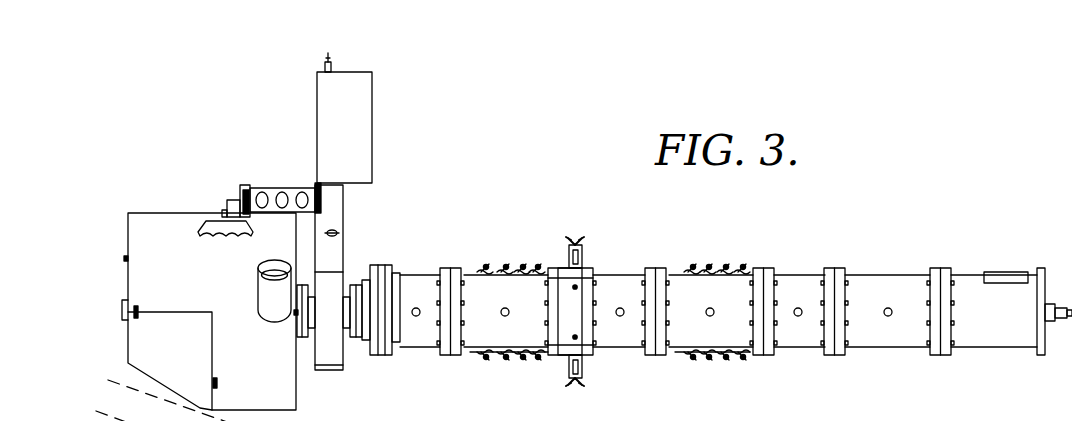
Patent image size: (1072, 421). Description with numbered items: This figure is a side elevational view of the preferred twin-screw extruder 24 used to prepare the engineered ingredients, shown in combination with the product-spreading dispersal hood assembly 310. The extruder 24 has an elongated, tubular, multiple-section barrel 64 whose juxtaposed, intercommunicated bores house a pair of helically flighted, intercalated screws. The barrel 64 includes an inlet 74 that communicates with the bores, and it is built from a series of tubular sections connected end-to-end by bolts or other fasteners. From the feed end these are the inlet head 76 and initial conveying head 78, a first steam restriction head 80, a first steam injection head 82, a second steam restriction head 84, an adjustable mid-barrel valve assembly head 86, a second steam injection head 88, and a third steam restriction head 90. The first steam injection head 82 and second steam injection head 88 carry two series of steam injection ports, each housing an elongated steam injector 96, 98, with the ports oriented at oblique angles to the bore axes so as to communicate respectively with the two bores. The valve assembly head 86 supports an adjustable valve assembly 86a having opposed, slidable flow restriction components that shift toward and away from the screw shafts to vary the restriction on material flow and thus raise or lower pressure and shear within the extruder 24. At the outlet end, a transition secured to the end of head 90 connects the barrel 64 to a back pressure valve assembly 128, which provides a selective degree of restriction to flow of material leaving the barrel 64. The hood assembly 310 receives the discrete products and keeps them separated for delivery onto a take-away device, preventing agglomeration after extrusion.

The dispersal hood assembly 310 is at (138, 200).
The back pressure valve assembly 128 is at (385, 168).
The extruder 24 is at (707, 299).
The barrel 64 is at (736, 308).
The inlet 74 is at (1007, 270).
The inlet head 76 is at (1011, 315).
The initial conveying head 78 is at (905, 340).
The first steam restriction head 80 is at (797, 342).
The first steam injection head 82 is at (712, 313).
The second steam restriction head 84 is at (632, 340).
The adjustable mid-barrel valve assembly head 86 is at (580, 311).
The adjustable valve assembly 86a is at (567, 372).
The second steam injection head 88 is at (506, 317).
The third steam restriction head 90 is at (415, 338).
The steam injector 96 is at (738, 268).
The steam injector 98 is at (502, 265).